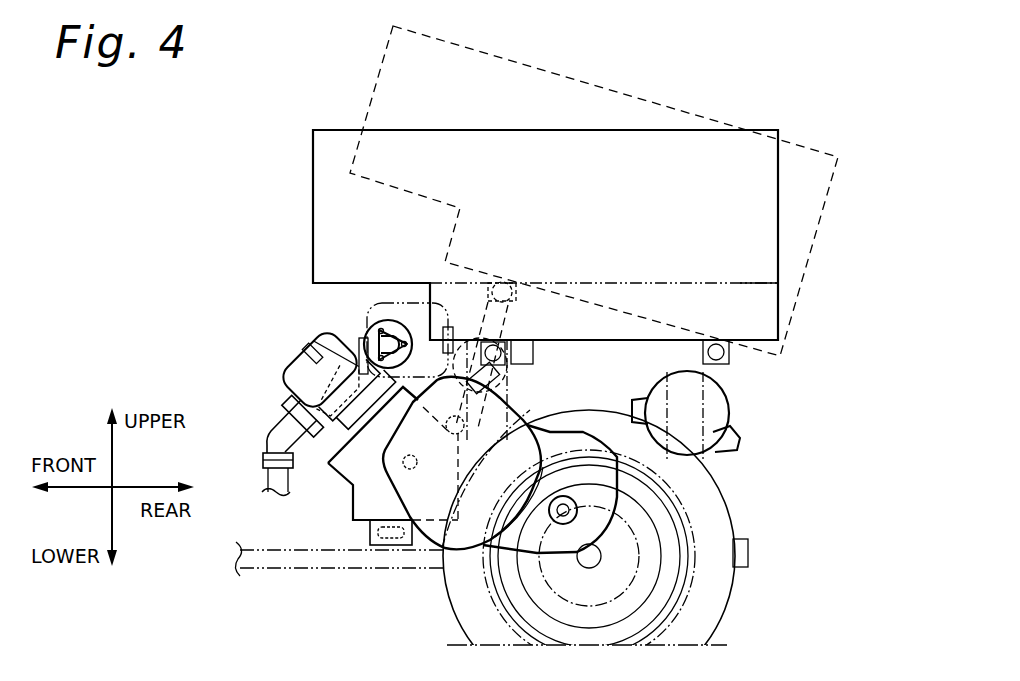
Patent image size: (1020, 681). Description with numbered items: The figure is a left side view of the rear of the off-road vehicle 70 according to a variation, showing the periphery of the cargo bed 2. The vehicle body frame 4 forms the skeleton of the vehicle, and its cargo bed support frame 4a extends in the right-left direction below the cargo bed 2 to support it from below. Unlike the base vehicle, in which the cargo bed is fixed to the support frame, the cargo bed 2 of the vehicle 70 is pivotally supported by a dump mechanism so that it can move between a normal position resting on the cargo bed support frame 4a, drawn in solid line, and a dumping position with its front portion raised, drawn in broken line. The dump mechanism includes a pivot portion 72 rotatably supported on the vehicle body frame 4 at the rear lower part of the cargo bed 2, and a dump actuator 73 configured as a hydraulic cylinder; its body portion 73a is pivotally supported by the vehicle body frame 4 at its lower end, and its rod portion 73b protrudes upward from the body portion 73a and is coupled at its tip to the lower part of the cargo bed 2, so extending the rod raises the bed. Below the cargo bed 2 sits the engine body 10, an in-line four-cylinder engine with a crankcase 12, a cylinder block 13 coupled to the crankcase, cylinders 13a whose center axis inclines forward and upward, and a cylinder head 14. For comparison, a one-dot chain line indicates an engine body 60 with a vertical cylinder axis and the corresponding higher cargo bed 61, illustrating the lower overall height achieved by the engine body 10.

The cargo bed 2 is at (680, 130).
The vehicle body frame 4 is at (355, 568).
The cargo bed support frame 4a is at (522, 350).
The engine body 10 is at (327, 477).
The crankcase 12 is at (372, 479).
The cylinder block 13 is at (340, 428).
The cylinder 13a is at (325, 402).
The cylinder head 14 is at (302, 390).
The engine body 60 is at (370, 308).
The cargo bed 61 is at (728, 285).
The vehicle 70 is at (240, 329).
The pivot portion 72 is at (730, 362).
The dump actuator 73 is at (652, 403).
The body portion 73a is at (505, 380).
The rod portion 73b is at (508, 352).